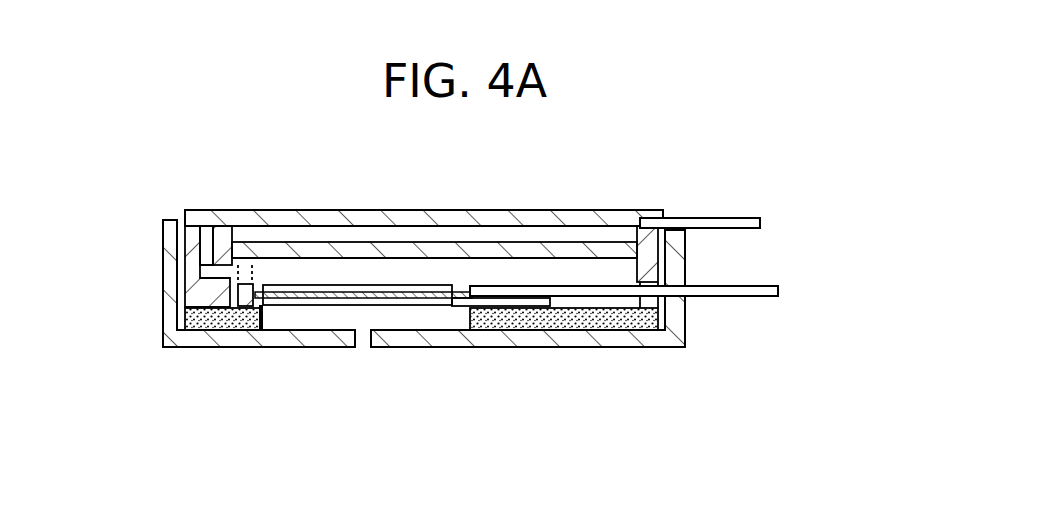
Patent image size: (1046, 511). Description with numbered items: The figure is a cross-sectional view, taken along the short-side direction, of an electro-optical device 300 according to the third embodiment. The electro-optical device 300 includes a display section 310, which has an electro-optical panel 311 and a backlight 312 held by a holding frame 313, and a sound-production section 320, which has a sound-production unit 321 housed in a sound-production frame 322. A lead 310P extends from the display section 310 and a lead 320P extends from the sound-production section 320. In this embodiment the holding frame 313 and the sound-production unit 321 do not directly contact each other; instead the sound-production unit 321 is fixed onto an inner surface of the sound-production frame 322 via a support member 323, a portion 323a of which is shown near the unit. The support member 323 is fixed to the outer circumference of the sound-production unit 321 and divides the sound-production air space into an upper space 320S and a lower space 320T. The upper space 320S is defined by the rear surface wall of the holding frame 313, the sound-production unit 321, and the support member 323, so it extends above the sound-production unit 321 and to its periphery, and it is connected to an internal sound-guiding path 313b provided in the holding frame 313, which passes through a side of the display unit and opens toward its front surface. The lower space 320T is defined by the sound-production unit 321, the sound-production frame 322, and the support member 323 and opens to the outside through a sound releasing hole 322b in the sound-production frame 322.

The electro-optical device 300 is at (758, 104).
The display section 310 is at (558, 203).
The lead terminal of light emitting unit 310P is at (725, 214).
The electro-optical panel 311 is at (350, 217).
The backlight 312 is at (390, 236).
The holding frame 313 is at (192, 212).
The internal sound-guiding path 313b is at (212, 212).
The sound-production section 320 is at (545, 355).
The lead terminal of base unit 320P is at (778, 297).
The upper space 320S is at (430, 270).
The lower space 320T is at (270, 320).
The sound-production unit 321 is at (400, 303).
The sound-production frame 322 is at (165, 293).
The sound releasing hole 322b is at (364, 348).
The support member 323 is at (657, 343).
The support substrate portion 323a is at (455, 306).